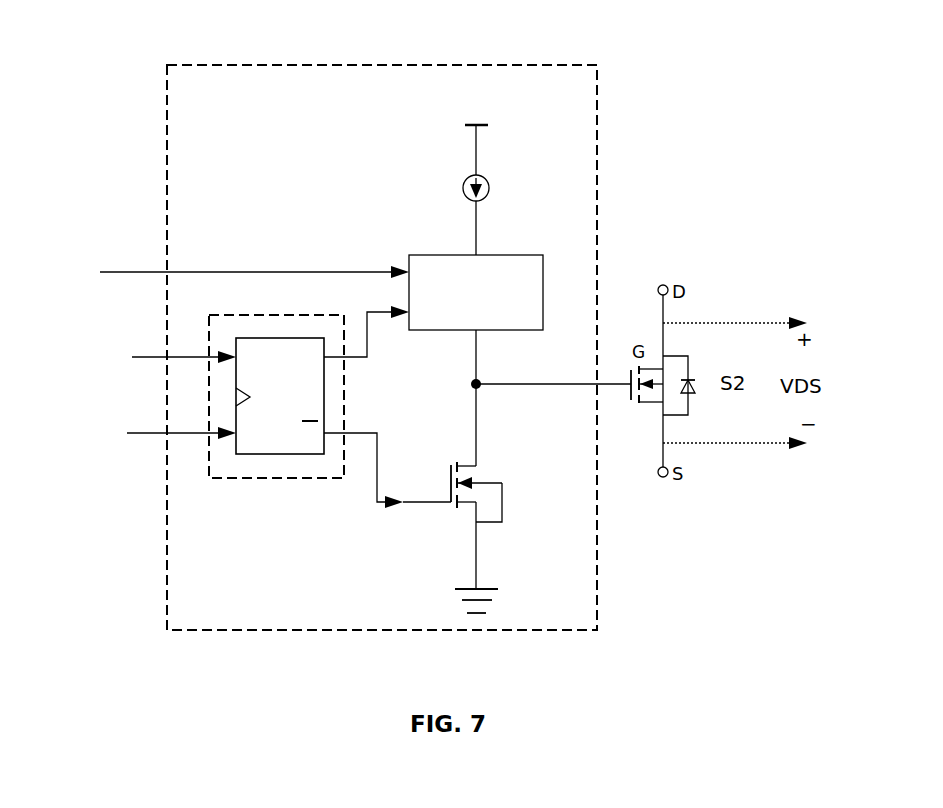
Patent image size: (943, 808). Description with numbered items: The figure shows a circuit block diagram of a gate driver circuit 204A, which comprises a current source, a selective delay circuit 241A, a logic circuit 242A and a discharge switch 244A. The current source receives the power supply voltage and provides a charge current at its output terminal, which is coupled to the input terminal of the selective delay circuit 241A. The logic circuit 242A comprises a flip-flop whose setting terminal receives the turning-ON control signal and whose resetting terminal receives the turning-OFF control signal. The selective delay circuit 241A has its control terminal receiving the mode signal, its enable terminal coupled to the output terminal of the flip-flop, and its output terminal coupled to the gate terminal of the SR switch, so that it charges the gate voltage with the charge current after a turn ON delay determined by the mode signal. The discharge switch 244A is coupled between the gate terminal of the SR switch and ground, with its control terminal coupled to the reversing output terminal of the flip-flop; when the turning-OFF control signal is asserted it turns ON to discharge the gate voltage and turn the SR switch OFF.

The gate driver circuit 204A is at (260, 52).
The selective delay circuit 241A is at (452, 332).
The logic circuit 242A is at (268, 480).
The discharge switch 244A is at (459, 508).